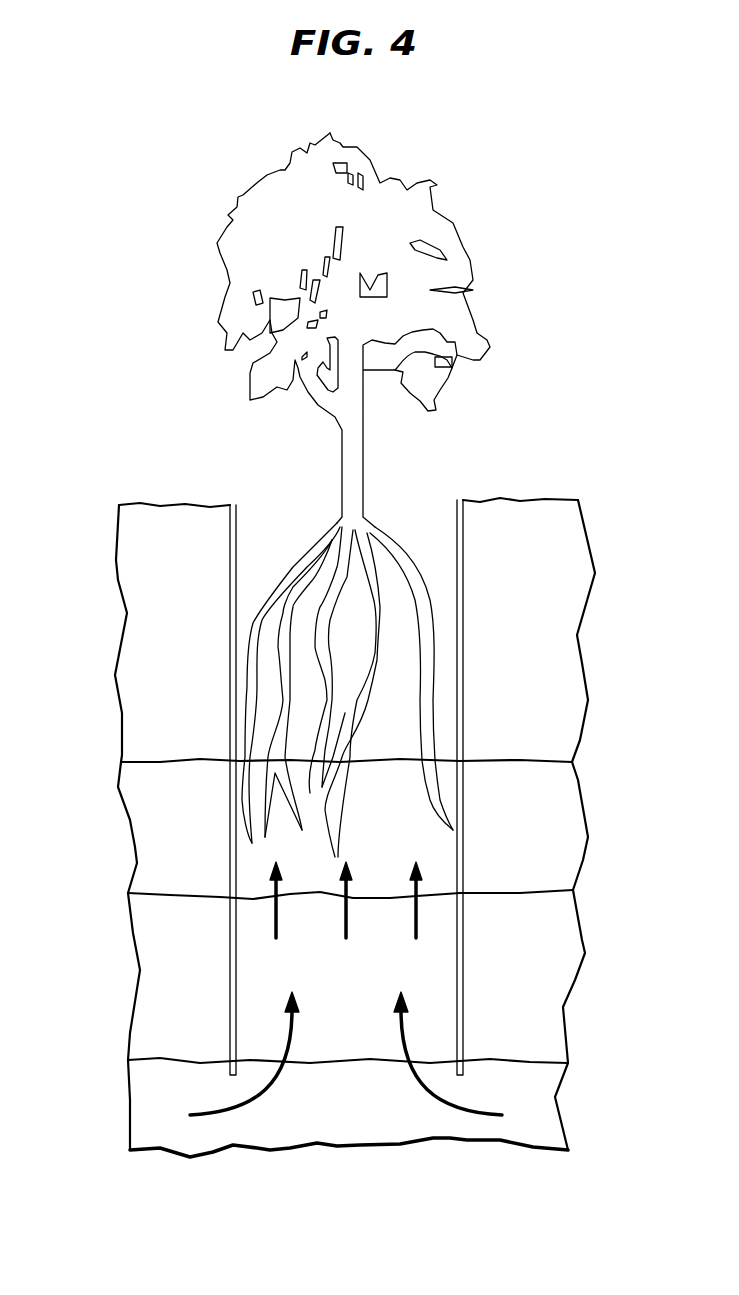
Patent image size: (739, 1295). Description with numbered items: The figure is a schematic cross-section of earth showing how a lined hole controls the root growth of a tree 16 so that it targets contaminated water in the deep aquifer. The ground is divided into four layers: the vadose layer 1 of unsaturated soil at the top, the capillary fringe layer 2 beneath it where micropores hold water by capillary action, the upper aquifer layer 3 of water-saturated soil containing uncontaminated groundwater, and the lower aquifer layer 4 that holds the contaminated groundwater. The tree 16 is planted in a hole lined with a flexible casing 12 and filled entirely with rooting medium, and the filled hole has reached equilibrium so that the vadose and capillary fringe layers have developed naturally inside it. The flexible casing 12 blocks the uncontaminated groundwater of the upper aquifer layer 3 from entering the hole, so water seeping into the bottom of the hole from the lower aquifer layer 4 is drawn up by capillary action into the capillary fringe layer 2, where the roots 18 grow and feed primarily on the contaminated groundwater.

The vadose layer 1 is at (108, 622).
The capillary fringe layer 2 is at (108, 825).
The upper aquifer layer 3 is at (106, 978).
The lower aquifer layer 4 is at (106, 1098).
The flexible casing 12 is at (236, 525).
The tree 16 is at (365, 470).
The roots 18 is at (427, 653).